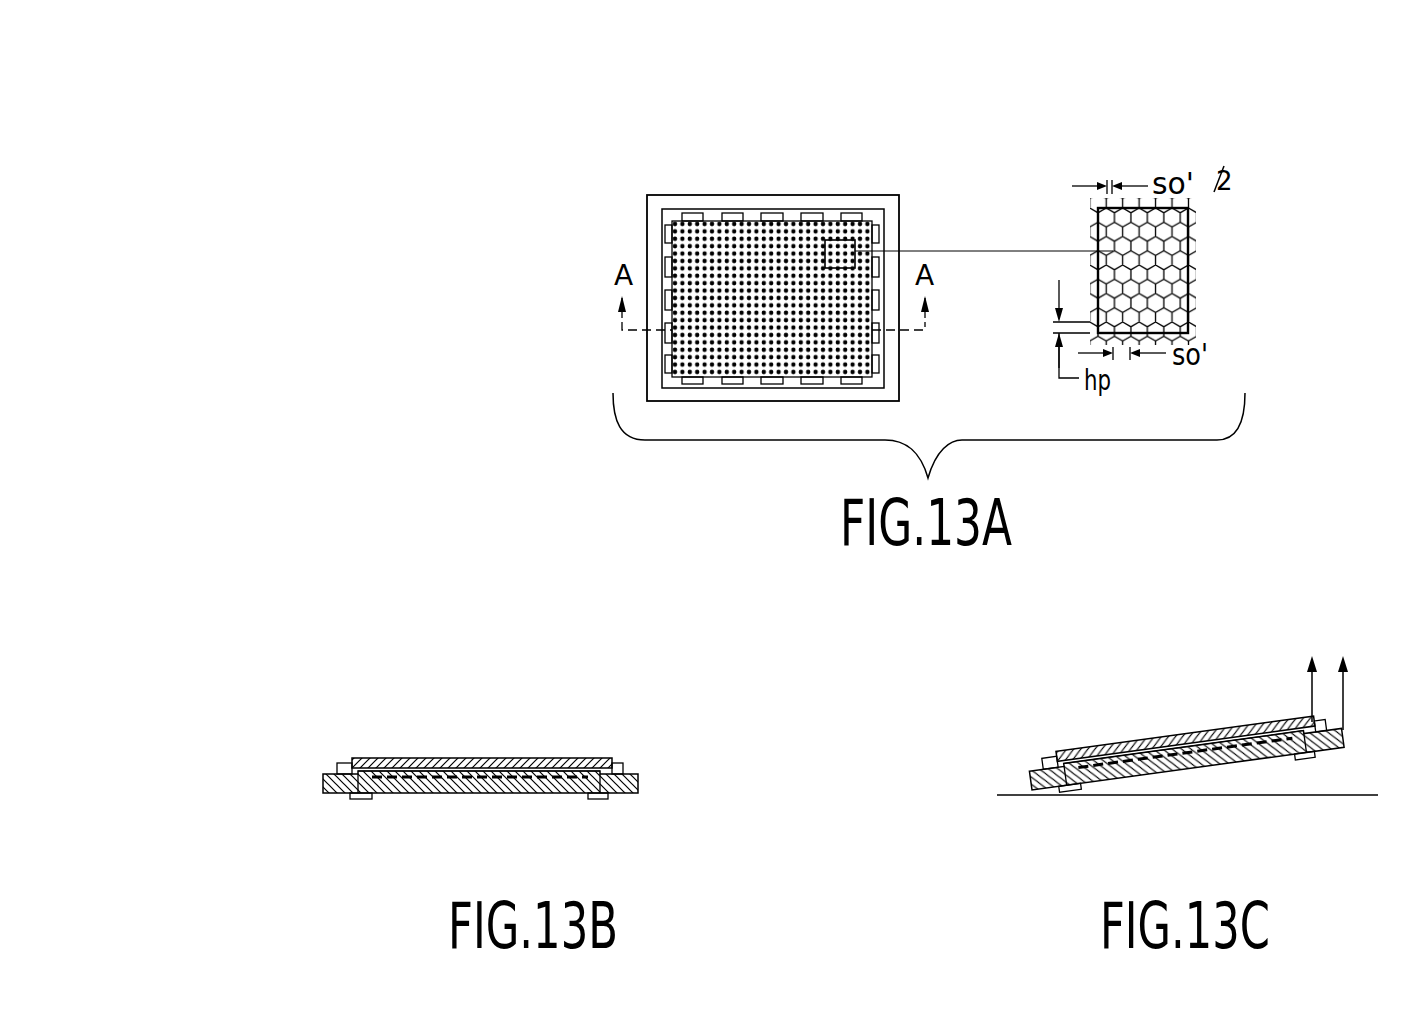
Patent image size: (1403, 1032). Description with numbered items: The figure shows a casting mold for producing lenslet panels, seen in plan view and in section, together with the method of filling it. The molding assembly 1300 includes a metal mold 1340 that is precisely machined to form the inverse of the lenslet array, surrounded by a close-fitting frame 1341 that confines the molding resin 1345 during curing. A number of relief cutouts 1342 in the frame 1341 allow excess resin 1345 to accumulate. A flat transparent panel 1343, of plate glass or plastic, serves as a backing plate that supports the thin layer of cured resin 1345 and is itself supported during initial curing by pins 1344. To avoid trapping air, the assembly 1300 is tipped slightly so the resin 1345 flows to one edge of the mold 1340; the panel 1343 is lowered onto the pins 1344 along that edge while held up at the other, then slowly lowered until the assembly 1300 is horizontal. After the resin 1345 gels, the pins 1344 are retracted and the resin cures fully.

In FIG. 13A, the molding assembly 1300 is at (428, 200).
In FIG. 13B, the molding assembly 1300 is at (376, 580).
In FIG. 13C, the molding assembly 1300 is at (999, 738).
In FIG. 13A, the metal mold 1340 is at (685, 282).
In FIG. 13B, the metal mold 1340 is at (458, 773).
In FIG. 13C, the metal mold 1340 is at (1260, 753).
In FIG. 13A, the frame 1341 is at (662, 227).
In FIG. 13A, the relief cutouts 1342 is at (730, 214).
In FIG. 13B, the relief cutouts 1342 is at (337, 768).
In FIG. 13B, the transparent panel 1343 is at (533, 760).
In FIG. 13C, the transparent panel 1343 is at (1137, 739).
In FIG. 13A, the pins 1344 is at (875, 218).
In FIG. 13B, the pins 1344 is at (607, 798).
In FIG. 13C, the pins 1344 is at (1065, 793).
In FIG. 13B, the molding resin 1345 is at (407, 773).
In FIG. 13C, the molding resin 1345 is at (1250, 734).